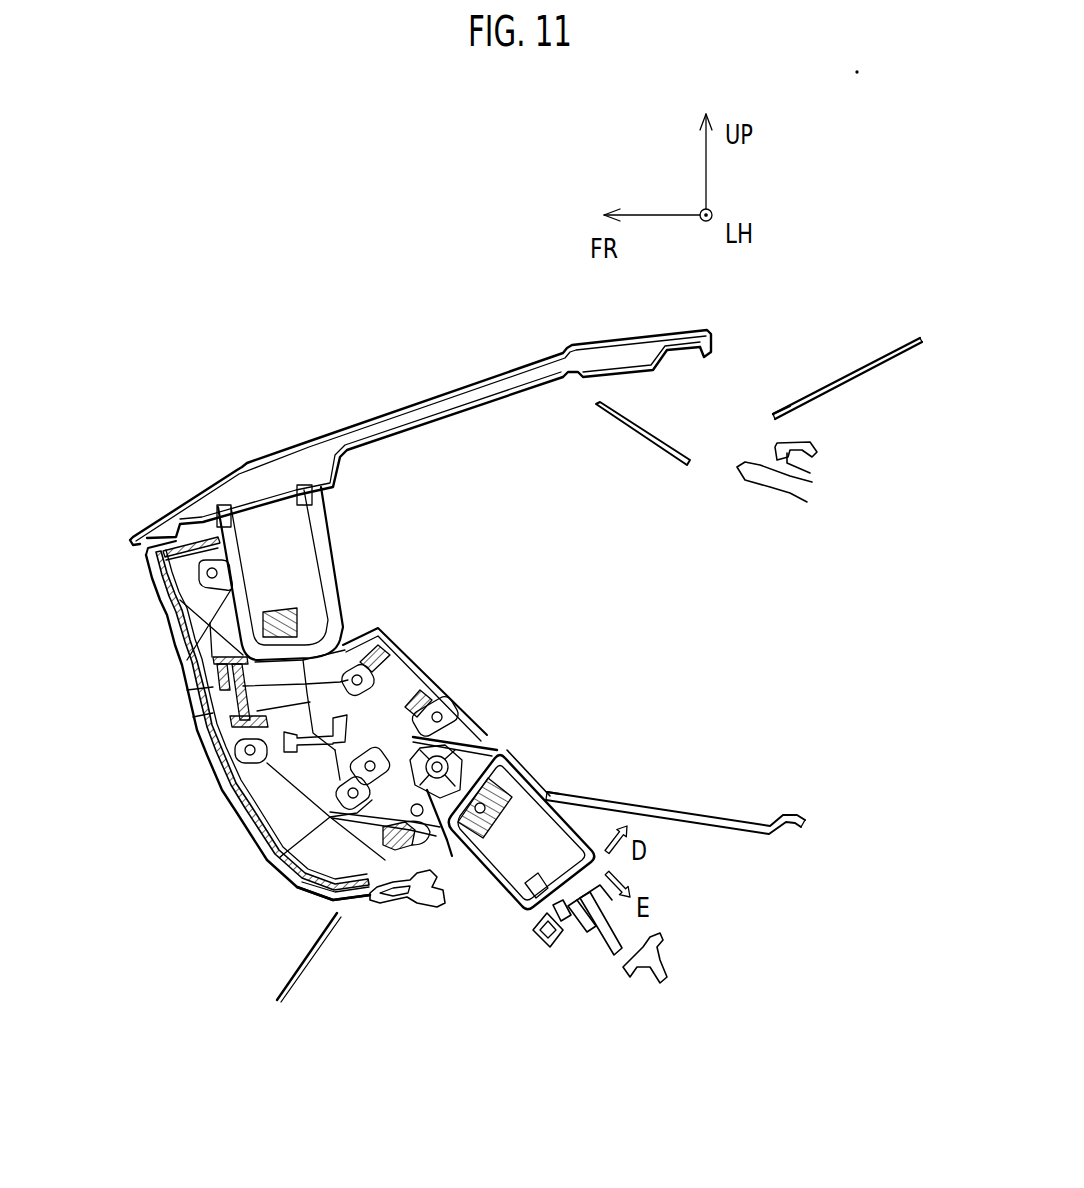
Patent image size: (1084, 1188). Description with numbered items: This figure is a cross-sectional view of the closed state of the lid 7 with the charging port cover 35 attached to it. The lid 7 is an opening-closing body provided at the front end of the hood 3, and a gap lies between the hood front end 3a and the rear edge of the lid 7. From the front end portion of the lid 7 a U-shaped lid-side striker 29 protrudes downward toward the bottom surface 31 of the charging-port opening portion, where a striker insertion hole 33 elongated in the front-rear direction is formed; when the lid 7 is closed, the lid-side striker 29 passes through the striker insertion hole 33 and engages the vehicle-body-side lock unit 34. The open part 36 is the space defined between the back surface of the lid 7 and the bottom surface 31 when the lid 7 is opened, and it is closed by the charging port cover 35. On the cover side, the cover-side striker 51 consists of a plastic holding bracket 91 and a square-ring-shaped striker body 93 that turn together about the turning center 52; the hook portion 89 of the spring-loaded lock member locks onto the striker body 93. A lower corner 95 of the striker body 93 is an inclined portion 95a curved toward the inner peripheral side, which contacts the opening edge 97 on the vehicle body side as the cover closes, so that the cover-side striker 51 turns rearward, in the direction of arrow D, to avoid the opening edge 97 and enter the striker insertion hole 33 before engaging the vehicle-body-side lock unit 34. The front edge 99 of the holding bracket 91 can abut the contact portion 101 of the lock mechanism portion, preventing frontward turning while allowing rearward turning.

The hood 3 is at (838, 378).
The hood front end 3a is at (773, 412).
The lid 7 is at (400, 407).
The lid-side striker 29 is at (320, 534).
The bottom surface 31 is at (700, 814).
The striker insertion hole 33 is at (545, 791).
The vehicle-body-side lock unit 34 is at (573, 937).
The charging port cover 35 is at (185, 733).
The open part 36 is at (590, 600).
The cover-side striker 51 is at (500, 748).
The turning center 52 is at (440, 760).
The hook portion 89 is at (300, 607).
The holding bracket 91 is at (527, 765).
The striker body 93 is at (493, 893).
The lower corner 95 is at (543, 938).
The inclined portion 95a is at (557, 922).
The opening edge 97 is at (377, 872).
The front edge 99 is at (434, 902).
The contact portion 101 is at (383, 832).